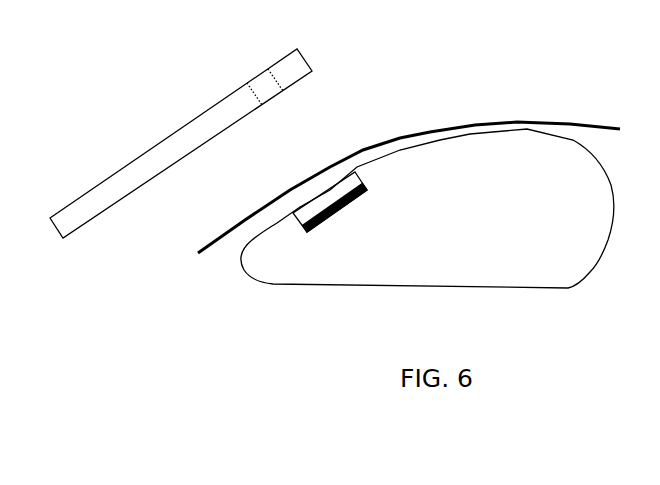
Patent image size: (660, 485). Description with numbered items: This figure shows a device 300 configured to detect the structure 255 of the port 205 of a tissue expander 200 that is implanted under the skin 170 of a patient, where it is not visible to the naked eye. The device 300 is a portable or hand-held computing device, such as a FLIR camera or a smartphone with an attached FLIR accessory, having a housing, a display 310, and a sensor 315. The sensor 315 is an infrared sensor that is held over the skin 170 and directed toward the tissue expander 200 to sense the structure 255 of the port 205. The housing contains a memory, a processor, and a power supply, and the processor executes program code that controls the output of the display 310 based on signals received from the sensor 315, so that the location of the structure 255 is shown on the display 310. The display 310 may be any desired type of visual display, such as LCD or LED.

The device 300 is at (128, 53).
The display 310 is at (135, 145).
The sensor 315 is at (250, 68).
The skin 170 is at (612, 127).
The tissue expander 200 is at (510, 225).
The port 205 is at (313, 196).
The structure 255 is at (330, 230).